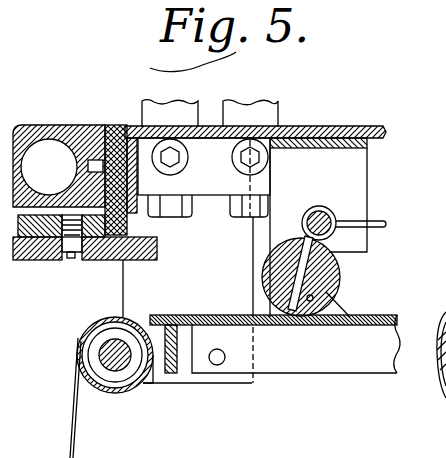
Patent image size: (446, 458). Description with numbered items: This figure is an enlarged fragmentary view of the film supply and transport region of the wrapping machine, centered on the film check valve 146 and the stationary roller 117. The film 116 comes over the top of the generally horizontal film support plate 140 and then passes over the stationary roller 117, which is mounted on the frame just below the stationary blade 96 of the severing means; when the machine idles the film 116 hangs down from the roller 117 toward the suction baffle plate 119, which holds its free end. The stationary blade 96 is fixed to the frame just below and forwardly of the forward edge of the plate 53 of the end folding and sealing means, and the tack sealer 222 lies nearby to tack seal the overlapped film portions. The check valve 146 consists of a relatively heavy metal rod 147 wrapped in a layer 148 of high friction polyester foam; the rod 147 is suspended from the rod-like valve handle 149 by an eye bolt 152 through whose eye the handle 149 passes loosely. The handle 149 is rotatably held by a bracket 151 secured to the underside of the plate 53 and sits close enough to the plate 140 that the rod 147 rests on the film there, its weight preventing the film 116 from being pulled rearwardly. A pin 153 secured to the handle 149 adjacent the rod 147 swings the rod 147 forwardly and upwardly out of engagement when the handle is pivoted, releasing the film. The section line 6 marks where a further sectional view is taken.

The suction baffle plate 119 is at (63, 0).
The tack sealer 222 is at (72, 125).
The stationary blade 96 is at (43, 248).
The plate 53 is at (298, 126).
The section line 6- 6 is at (333, 101).
The bracket 151 is at (360, 160).
The valve handle 149 is at (327, 208).
The eye bolt 152 is at (300, 225).
The pin 153 is at (417, 215).
The film check valve 146 is at (353, 263).
The rod 147 is at (315, 327).
The layer of high friction material 148 is at (355, 327).
The film support plate 140 is at (380, 316).
The stationary roller 117 is at (100, 391).
The film 116 is at (72, 410).